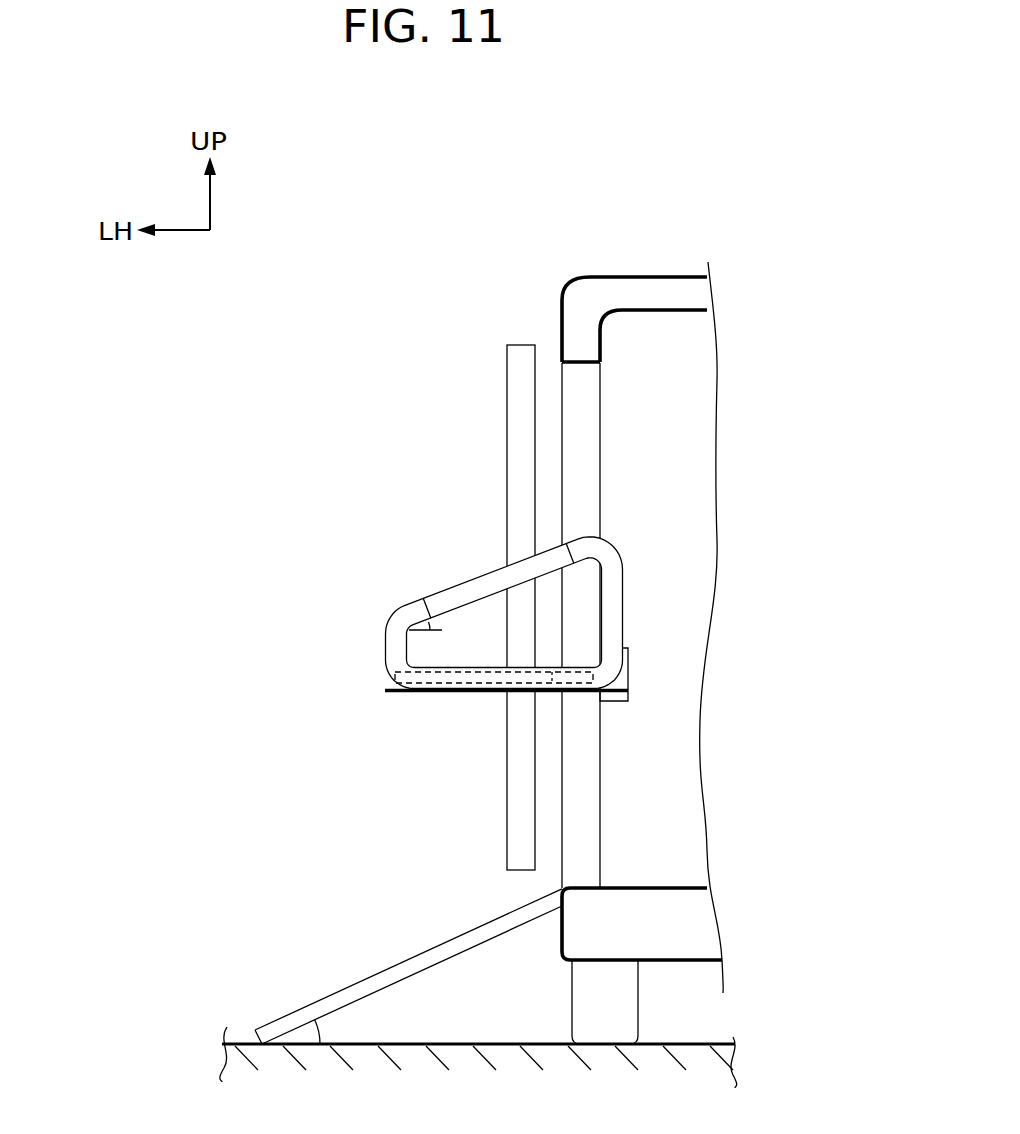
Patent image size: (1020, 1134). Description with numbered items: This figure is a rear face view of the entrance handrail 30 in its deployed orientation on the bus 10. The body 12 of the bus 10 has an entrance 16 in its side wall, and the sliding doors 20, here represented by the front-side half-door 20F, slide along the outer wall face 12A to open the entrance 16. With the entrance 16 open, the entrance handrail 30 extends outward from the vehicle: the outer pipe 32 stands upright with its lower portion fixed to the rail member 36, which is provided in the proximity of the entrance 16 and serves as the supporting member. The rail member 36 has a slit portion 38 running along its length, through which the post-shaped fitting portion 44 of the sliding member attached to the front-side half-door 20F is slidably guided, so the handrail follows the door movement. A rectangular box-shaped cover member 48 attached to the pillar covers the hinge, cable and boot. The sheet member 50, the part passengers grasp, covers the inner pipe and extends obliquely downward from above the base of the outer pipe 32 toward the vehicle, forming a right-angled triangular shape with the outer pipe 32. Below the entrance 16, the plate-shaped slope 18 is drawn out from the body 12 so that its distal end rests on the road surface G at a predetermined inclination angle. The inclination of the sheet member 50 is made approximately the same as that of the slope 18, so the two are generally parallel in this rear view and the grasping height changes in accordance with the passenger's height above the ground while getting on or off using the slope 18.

The bus 10 is at (645, 226).
The body 12 is at (663, 276).
The outer wall face 12A is at (560, 322).
The entrance 16 is at (585, 840).
The slope 18 is at (365, 977).
The sliding doors 20 is at (455, 574).
The front-side half-door 20F is at (513, 363).
The entrance handrail 30 is at (396, 609).
The outer pipe 32 is at (613, 585).
The rail member 36 is at (385, 683).
The slit portion 38 is at (400, 697).
The fitting portion 44 is at (556, 683).
The cover member 48 is at (628, 655).
The sheet member 50 is at (478, 580).
The road surface G is at (247, 1042).